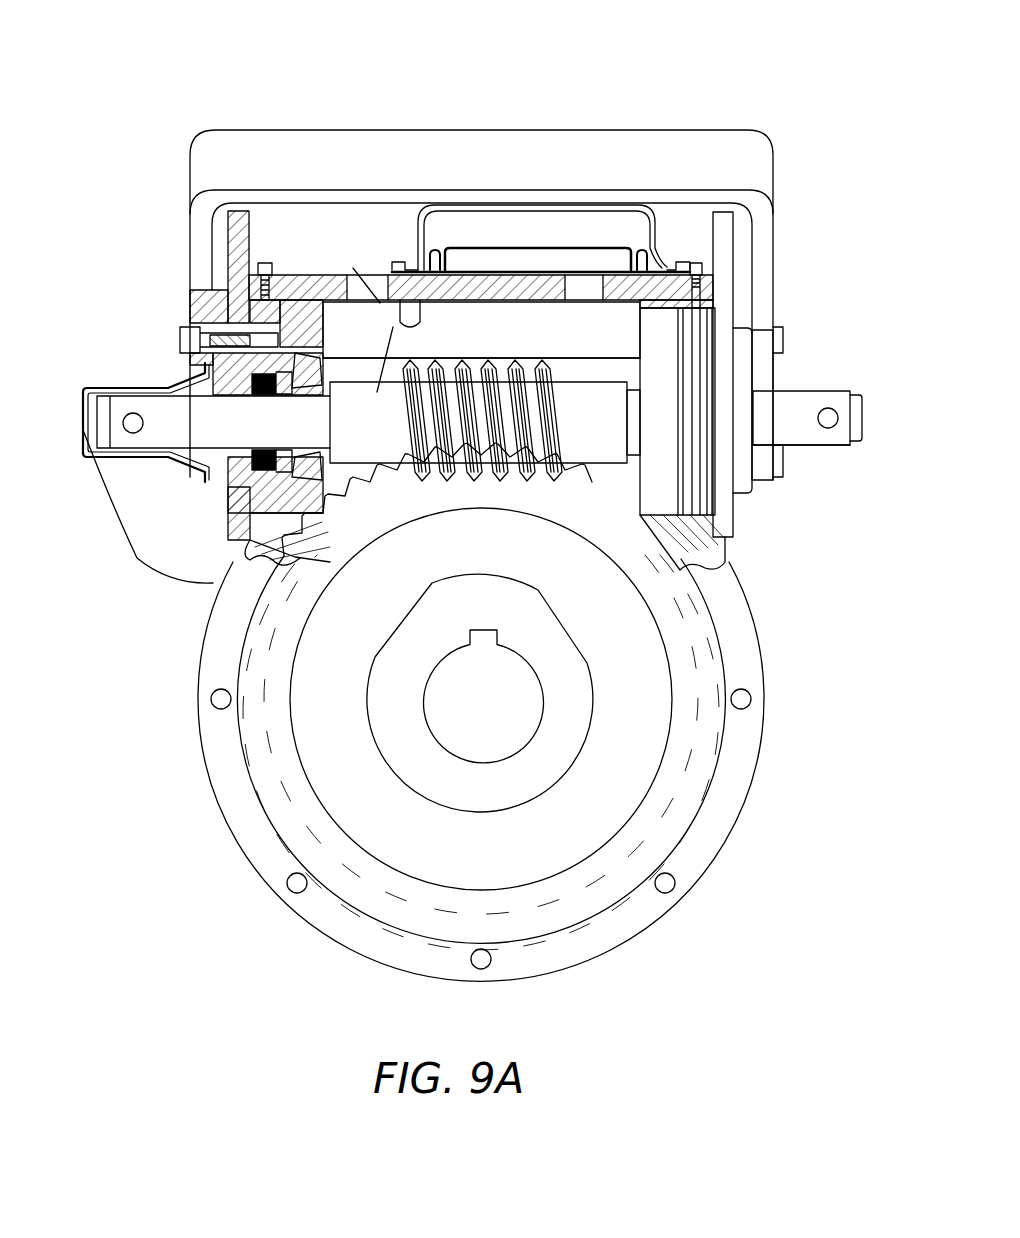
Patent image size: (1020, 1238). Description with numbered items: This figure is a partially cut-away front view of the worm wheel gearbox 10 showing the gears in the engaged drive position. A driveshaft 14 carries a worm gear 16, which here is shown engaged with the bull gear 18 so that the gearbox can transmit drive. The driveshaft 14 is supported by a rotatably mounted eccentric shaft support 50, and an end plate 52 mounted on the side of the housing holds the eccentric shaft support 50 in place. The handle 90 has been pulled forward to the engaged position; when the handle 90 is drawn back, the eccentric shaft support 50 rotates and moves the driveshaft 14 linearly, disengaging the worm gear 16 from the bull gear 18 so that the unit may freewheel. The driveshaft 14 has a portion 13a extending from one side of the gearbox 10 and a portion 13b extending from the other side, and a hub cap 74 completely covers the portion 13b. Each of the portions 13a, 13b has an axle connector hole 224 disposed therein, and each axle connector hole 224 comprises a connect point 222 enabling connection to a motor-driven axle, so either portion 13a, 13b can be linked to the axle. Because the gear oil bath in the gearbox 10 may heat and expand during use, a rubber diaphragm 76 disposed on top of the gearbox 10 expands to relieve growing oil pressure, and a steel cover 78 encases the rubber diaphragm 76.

The worm wheel gearbox 10 is at (238, 70).
The handle 90 is at (405, 150).
The steel cover 78 is at (415, 250).
The rubber diaphragm 76 is at (498, 250).
The end plate 52 is at (725, 252).
The worm gear 16 is at (462, 365).
The bull gear 18 is at (572, 489).
The driveshaft 14 is at (796, 380).
The axle connector hole 224 is at (128, 433).
The connect point 222 is at (816, 437).
The portion of the driveshaft 13b is at (845, 455).
The portion of the driveshaft 13a is at (118, 398).
The hub cap 74 is at (130, 506).
The eccentric shaft support 50 is at (670, 486).